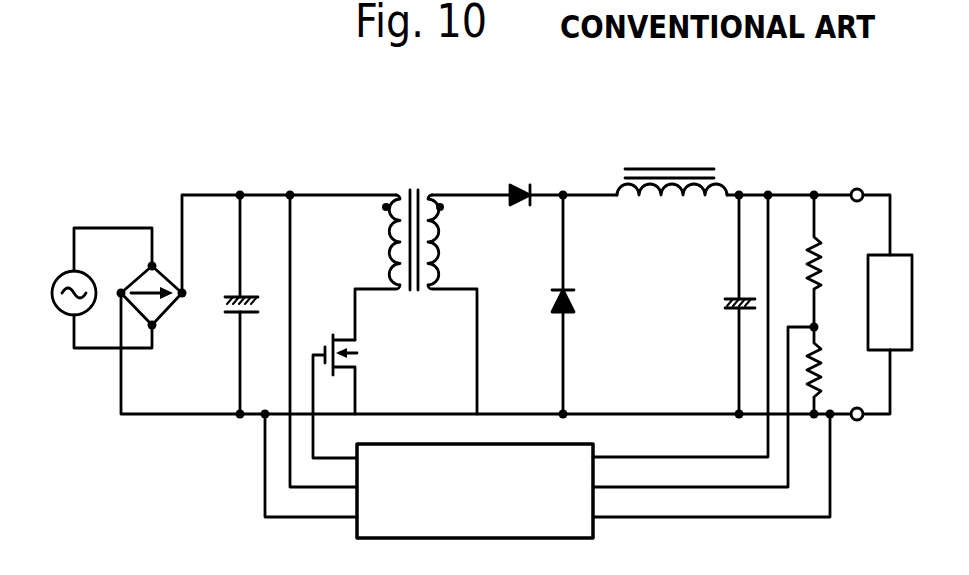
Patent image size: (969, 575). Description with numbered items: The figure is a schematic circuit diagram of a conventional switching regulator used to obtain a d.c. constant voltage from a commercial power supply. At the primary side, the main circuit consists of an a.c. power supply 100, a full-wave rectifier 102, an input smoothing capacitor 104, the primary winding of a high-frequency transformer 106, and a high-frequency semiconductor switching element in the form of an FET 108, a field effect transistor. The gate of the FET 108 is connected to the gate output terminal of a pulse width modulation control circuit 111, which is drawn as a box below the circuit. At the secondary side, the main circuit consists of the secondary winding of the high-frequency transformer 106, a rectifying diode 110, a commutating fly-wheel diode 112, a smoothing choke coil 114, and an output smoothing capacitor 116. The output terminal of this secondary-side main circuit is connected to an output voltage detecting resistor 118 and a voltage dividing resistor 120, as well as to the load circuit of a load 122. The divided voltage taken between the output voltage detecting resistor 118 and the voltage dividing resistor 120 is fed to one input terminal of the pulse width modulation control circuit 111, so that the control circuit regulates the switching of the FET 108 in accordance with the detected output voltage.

The a.c. power supply 100 is at (66, 318).
The full-wave rectifier 102 is at (160, 312).
The input smoothing capacitor 104 is at (234, 296).
The high-frequency transformer 106 is at (408, 196).
The FET 108 is at (360, 351).
The rectifying diode 110 is at (518, 186).
The pulse width modulation control circuit 111 is at (598, 446).
The commutating fly-wheel diode 112 is at (576, 301).
The smoothing choke coil 114 is at (660, 166).
The output smoothing capacitor 116 is at (728, 302).
The output voltage detecting resistor 118 is at (806, 378).
The voltage dividing resistor 120 is at (808, 262).
The load 122 is at (895, 338).